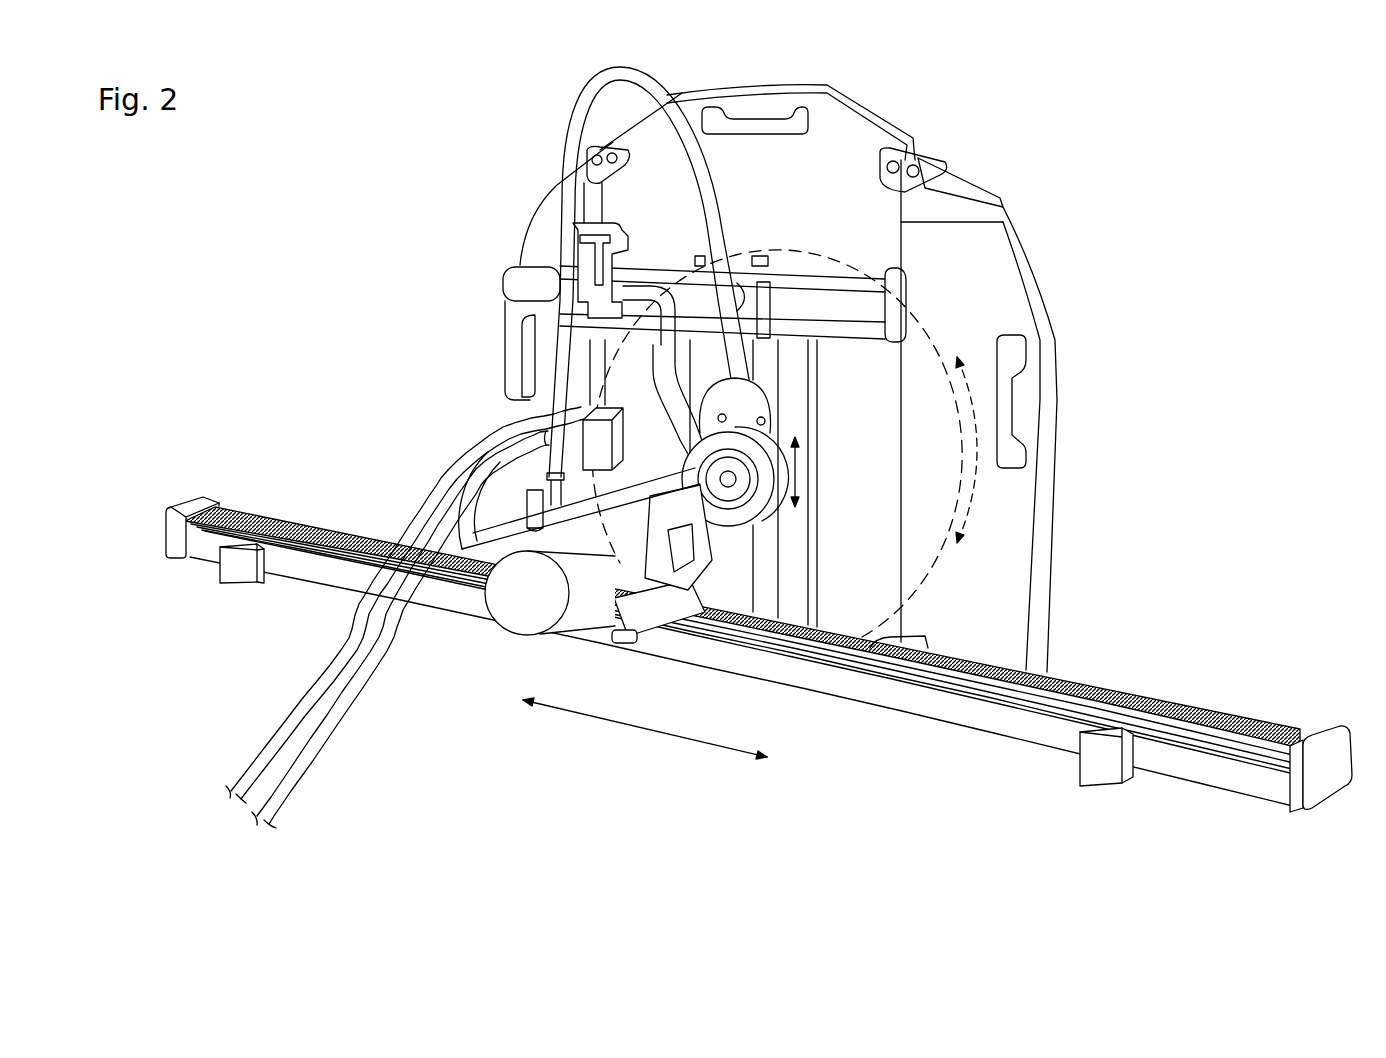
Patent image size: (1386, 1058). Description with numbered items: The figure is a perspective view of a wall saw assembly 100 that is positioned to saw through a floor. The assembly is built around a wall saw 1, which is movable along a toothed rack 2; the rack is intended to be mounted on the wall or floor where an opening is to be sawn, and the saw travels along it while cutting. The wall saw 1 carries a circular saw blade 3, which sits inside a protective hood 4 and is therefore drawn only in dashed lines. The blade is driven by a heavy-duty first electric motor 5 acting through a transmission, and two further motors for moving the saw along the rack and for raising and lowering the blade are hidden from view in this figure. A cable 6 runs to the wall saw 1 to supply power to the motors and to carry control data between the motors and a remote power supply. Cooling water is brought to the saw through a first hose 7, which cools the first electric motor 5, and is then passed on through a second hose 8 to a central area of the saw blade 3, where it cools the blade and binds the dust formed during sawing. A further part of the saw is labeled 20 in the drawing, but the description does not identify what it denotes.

The wall saw assembly 100 is at (1150, 349).
The wall saw 1 is at (432, 333).
The toothed rack 2 is at (192, 551).
The circular saw blade 3 is at (933, 337).
The protective hood 4 is at (870, 133).
The first electric motor 5 is at (518, 601).
The cable 6 is at (292, 751).
The first hose 7 is at (468, 488).
The second hose 8 is at (572, 157).
The carriage 20 is at (752, 527).